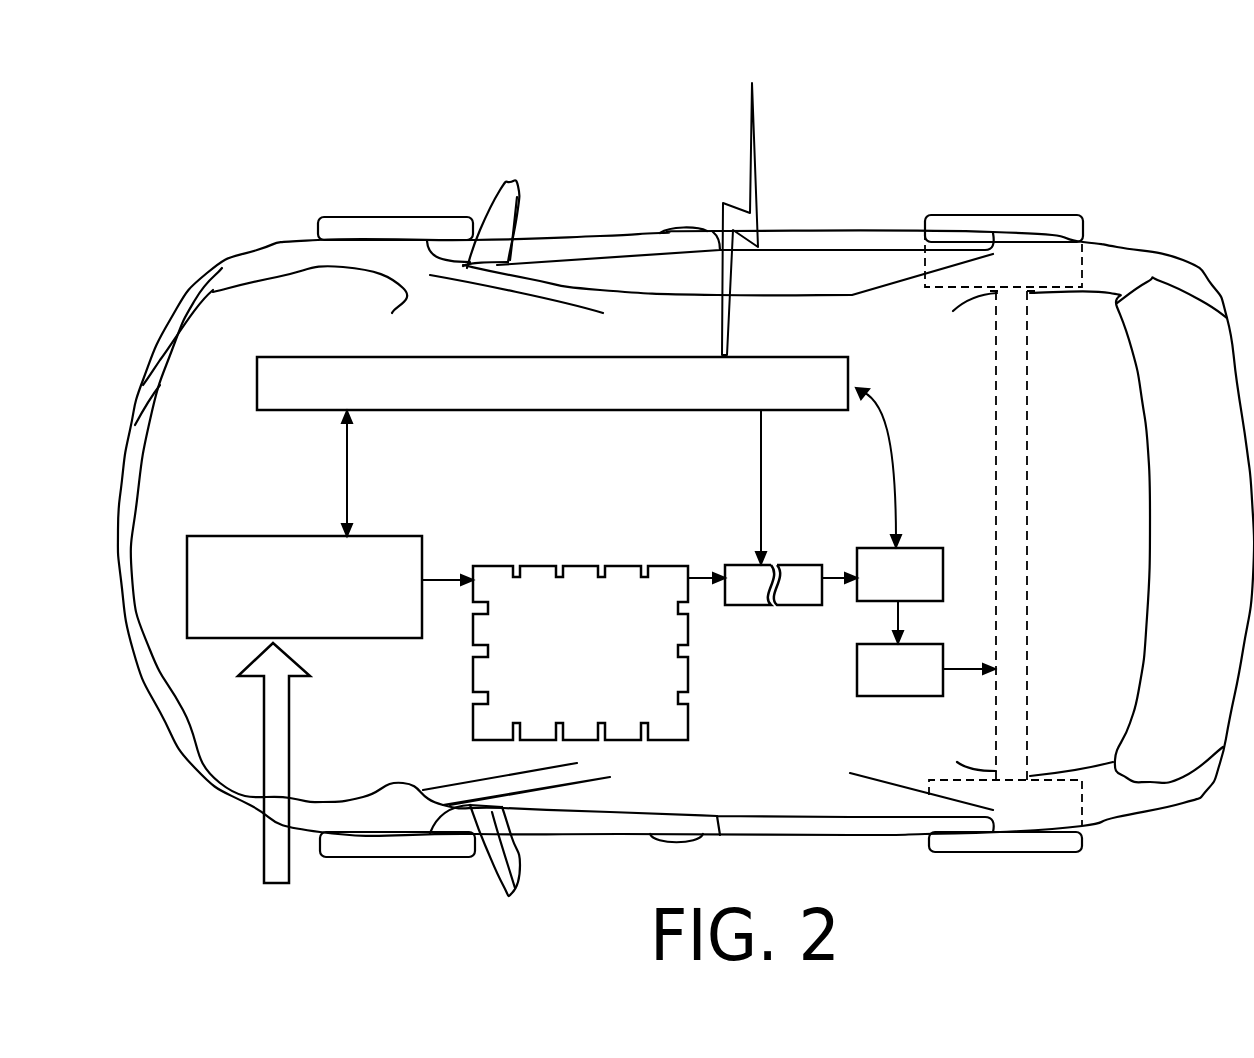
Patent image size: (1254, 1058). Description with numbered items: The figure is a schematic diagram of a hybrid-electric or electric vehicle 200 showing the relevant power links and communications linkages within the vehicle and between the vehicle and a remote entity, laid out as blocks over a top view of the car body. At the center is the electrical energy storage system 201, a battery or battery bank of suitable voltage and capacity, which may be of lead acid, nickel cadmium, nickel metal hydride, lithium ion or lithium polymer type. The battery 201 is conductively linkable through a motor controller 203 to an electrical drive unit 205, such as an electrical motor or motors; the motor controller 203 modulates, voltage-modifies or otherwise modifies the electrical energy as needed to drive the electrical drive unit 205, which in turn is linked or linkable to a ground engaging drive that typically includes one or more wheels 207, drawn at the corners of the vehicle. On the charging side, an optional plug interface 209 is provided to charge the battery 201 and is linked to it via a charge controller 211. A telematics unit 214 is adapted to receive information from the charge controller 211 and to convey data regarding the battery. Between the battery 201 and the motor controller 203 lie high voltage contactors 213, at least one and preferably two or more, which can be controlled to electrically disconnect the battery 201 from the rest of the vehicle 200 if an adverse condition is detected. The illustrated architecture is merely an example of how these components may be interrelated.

The vehicle 200 is at (815, 205).
The electrical energy storage system 201 is at (613, 654).
The motor controller 203 is at (924, 587).
The electrical drive unit 205 is at (924, 683).
The wheels 207 is at (1017, 228).
The plug interface 209 is at (263, 881).
The charge controller 211 is at (329, 601).
The high voltage contactors 213 is at (752, 565).
The telematics unit 214 is at (580, 397).